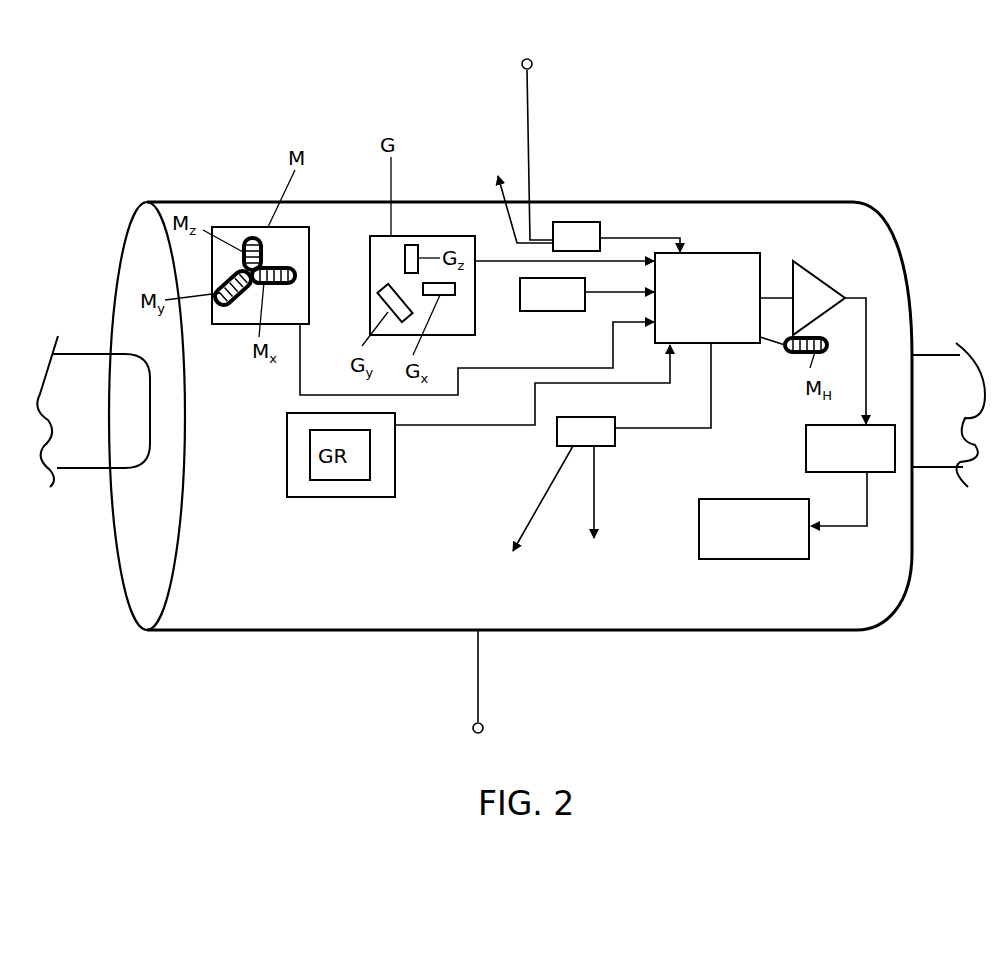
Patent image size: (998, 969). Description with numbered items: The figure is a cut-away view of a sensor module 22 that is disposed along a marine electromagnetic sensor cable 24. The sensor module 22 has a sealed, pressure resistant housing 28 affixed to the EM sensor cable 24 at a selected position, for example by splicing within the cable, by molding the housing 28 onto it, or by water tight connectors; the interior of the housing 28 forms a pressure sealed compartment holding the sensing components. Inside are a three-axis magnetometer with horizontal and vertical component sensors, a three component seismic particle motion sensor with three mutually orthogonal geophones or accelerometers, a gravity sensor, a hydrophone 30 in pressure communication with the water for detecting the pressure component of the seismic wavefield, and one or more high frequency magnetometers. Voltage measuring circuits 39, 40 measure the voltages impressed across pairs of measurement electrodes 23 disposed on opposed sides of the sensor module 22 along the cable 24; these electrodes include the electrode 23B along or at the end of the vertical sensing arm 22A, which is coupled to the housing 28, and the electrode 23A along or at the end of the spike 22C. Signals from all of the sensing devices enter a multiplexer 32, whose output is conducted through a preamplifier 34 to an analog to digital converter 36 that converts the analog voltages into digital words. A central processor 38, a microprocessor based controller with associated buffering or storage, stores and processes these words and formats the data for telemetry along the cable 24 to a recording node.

The sensor module 22 is at (694, 146).
The vertical sensing arm 22A is at (528, 128).
The spike 22C is at (480, 648).
The measurement electrodes 23 is at (555, 514).
The electrode 23A is at (500, 750).
The electrode 23B is at (542, 49).
The EM sensor cable 24 is at (95, 440).
The housing 28 is at (176, 202).
The hydrophone 30 is at (543, 300).
The multiplexer 32 is at (736, 252).
The preamplifier 34 is at (828, 283).
The analog to digital converter 36 is at (806, 456).
The central processor 38 is at (730, 561).
The voltage measuring circuit 39 is at (604, 447).
The voltage measuring circuit 40 is at (582, 219).